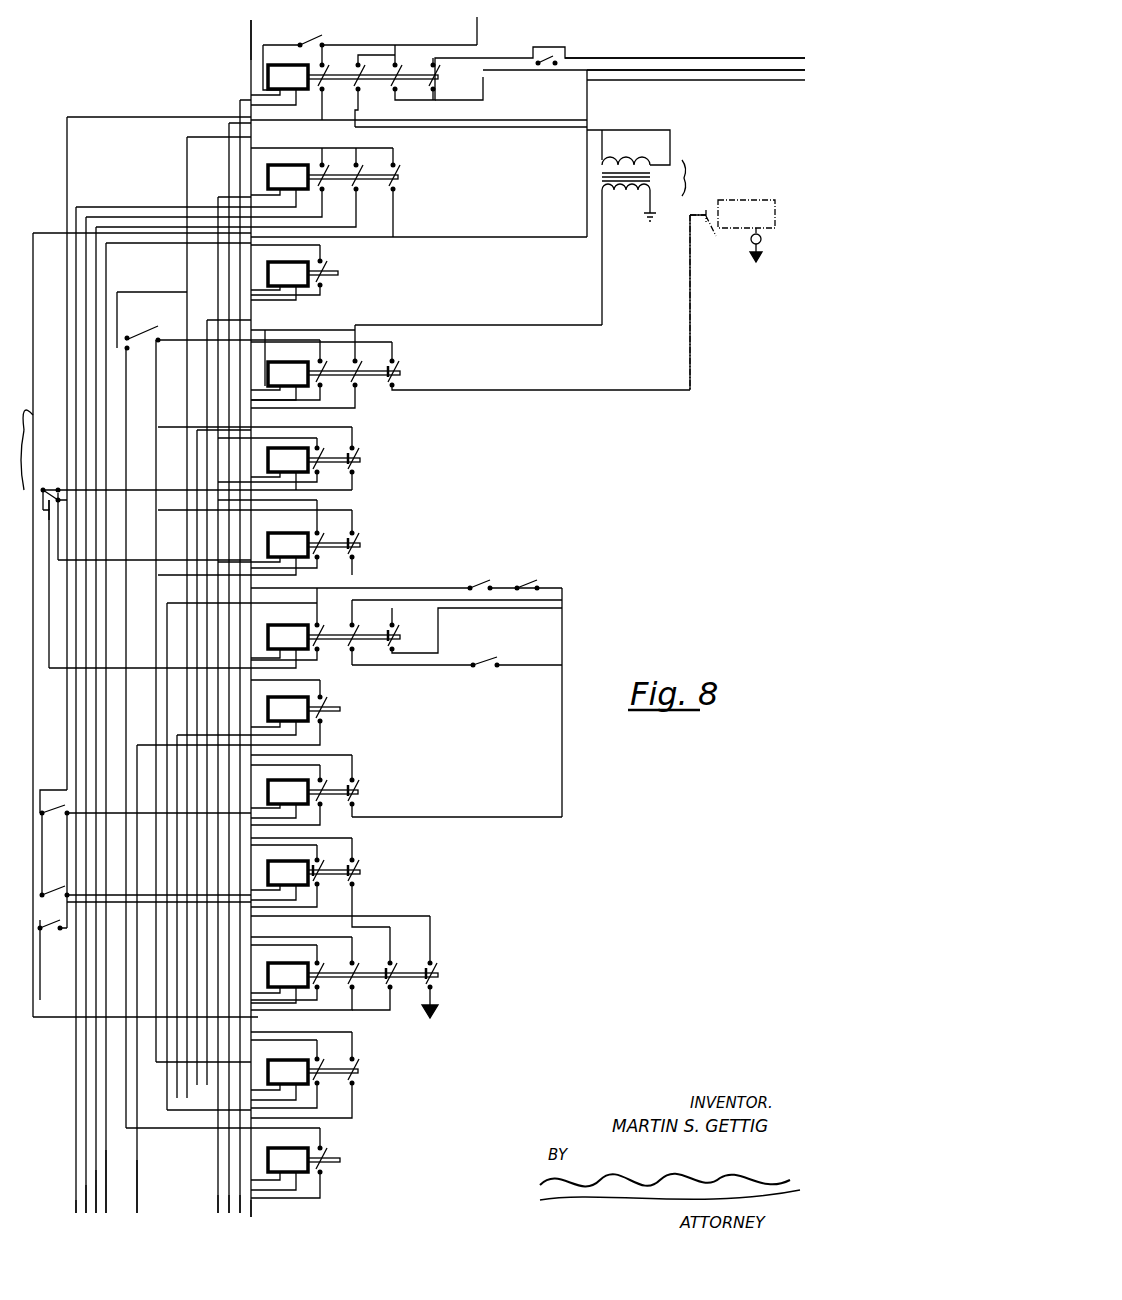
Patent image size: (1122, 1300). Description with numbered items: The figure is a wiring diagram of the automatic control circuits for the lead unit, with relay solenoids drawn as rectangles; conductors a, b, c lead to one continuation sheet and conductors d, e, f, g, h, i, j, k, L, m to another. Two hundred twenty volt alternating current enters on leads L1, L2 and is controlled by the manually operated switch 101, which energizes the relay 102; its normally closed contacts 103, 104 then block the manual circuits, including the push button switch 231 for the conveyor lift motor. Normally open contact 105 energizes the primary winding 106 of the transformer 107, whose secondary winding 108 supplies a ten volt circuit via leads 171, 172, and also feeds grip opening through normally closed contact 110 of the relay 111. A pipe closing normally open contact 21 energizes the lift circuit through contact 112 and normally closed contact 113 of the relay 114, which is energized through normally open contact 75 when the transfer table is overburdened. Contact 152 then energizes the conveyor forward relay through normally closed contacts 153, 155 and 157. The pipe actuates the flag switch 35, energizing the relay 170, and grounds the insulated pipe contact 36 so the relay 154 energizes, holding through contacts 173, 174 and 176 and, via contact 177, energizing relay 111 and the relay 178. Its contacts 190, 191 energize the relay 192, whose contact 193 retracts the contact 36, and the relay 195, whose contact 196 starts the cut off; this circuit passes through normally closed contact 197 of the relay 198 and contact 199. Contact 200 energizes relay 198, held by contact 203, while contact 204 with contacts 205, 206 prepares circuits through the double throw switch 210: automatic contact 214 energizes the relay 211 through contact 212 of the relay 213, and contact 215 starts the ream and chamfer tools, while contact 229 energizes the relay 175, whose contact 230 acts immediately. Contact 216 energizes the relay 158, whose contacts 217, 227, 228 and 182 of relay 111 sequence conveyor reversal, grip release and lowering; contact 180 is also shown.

The manually operated switch 101 is at (312, 40).
The relay 102 is at (279, 85).
The normally closed contact of relay 102 103 is at (436, 76).
The normally closed contact of relay 102 104 is at (455, 75).
The normally open contact of relay 102 105 is at (337, 82).
The primary winding 106 is at (626, 160).
The transformer 107 is at (702, 178).
The secondary winding 108 is at (627, 200).
The normally closed contact of relay 111 110 is at (396, 168).
The relay 111 is at (322, 177).
The normally open contact of relay 102 112 is at (374, 91).
The normally closed contact of relay 114 113 is at (300, 874).
The relay 114 is at (301, 869).
The normally open contact of switch 25 152 is at (140, 330).
The normally closed contact of relay 154 153 is at (397, 368).
The relay 154 is at (303, 365).
The normally closed contact of relay 114 155 is at (358, 867).
The normally closed contact of relay 158 157 is at (388, 968).
The relay 158 is at (301, 970).
The relay 170 is at (301, 786).
The insulated lead 171 is at (603, 255).
The lead 172 is at (653, 214).
The normally open contact of relay 154 173 is at (326, 368).
The normally closed contact of relay 175 174 is at (358, 535).
The relay 175 is at (255, 537).
The normally closed contact of relay 158 176 is at (436, 968).
The normally open contact of relay 154 177 is at (362, 366).
The relay 178 is at (301, 1066).
The contact 180 is at (303, 182).
The normally open contact of relay 111 182 is at (320, 187).
The normally open contact of relay 178 190 is at (358, 1060).
The normally open contact of relay 178 191 is at (300, 1072).
The relay 192 is at (285, 1159).
The normally open contact of relay 192 193 is at (328, 1154).
The relay 195 is at (285, 707).
The normally open contact of relay 195 196 is at (328, 704).
The normally closed contact of relay 198 197 is at (397, 628).
The relay 198 is at (284, 628).
The normally open contact of relay 170 199 is at (301, 790).
The normally open contact of switch 60 200 is at (480, 660).
The normally open contact of relay 198 203 is at (360, 630).
The normally open contact of relay 198 204 is at (325, 630).
The normally closed contact of switch 60 205 is at (480, 586).
The normally closed contact of switch 60 206 is at (528, 587).
The double throw switch 210 is at (50, 485).
The relay 211 is at (285, 272).
The normally closed contact of relay 213 212 is at (358, 448).
The relay 213 is at (255, 458).
The automatic contact of switch 210 214 is at (62, 480).
The normally open contact of relay 211 215 is at (333, 268).
The normally open contact of relay 213 216 is at (285, 451).
The normally open contact of relay 158 217 is at (299, 970).
The normally closed contact of relay 170 227 is at (358, 782).
The normally open contact of relay 158 228 is at (317, 973).
The contact of switch 210 229 is at (44, 420).
The normally open contact of relay 175 230 is at (301, 534).
The push button type switch 231 is at (548, 68).
The normally open contact of switch 20 21 is at (143, 947).
The flag switch 35 is at (56, 808).
The insulated pipe contact 36 is at (708, 232).
The normally open contact of flag switch 74 75 is at (146, 901).
The lead L1 is at (248, 40).
The lead L2 is at (470, 45).
The conductor a is at (748, 58).
The conductor b is at (768, 69).
The conductor c is at (790, 79).
The conductor d is at (76, 1208).
The conductor e is at (86, 1190).
The conductor f is at (96, 1175).
The conductor g is at (106, 1155).
The conductor h is at (137, 1174).
The conductor i is at (148, 1200).
The conductor j is at (218, 1205).
The conductor k is at (229, 1205).
The conductor L is at (240, 1203).
The conductor m is at (251, 1217).